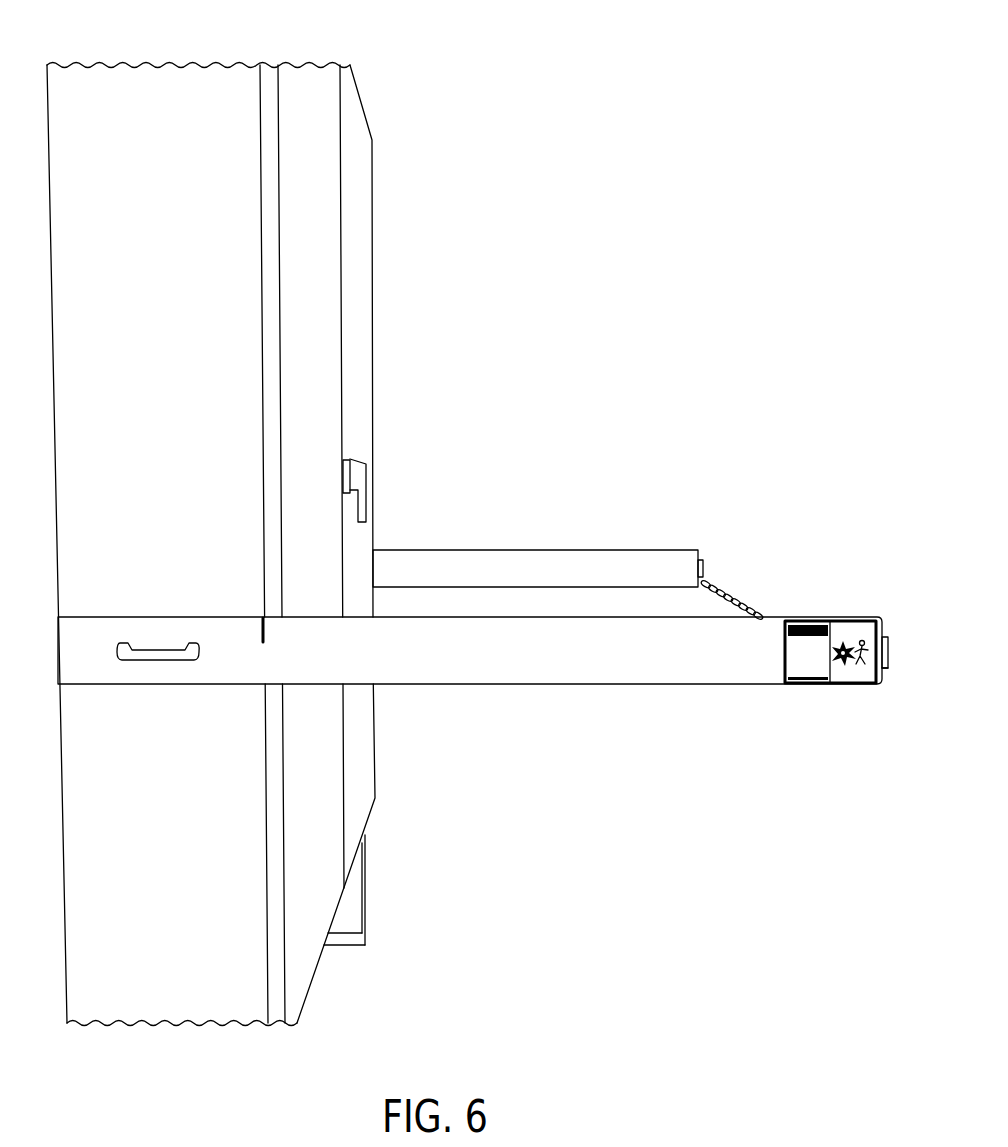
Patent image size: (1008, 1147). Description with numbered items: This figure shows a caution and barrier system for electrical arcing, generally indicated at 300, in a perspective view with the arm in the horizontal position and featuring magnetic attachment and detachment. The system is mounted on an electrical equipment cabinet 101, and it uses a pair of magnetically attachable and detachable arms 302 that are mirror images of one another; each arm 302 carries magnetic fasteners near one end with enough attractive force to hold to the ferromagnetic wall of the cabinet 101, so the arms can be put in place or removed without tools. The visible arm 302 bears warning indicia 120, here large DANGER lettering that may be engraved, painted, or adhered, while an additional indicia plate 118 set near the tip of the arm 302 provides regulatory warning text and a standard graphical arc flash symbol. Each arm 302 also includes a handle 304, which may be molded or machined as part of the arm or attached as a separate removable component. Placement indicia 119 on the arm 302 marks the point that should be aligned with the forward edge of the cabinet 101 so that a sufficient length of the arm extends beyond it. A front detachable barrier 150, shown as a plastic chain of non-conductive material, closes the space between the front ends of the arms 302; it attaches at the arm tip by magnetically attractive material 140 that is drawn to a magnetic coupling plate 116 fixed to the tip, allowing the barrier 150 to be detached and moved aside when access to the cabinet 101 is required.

The caution and barrier system for electrical arcing 300 is at (738, 72).
The cabinet 101 is at (373, 215).
The magnetically attachable/detachable arm 302 is at (531, 550).
The warning indicia 120 is at (562, 688).
The handle 304 is at (160, 652).
The placement indicia 119 is at (262, 617).
The front detachable barrier 150 is at (742, 603).
The indicia plate 118 is at (850, 682).
The magnetic coupling plate 116 is at (886, 637).
The magnetically attractive material 140 is at (886, 668).